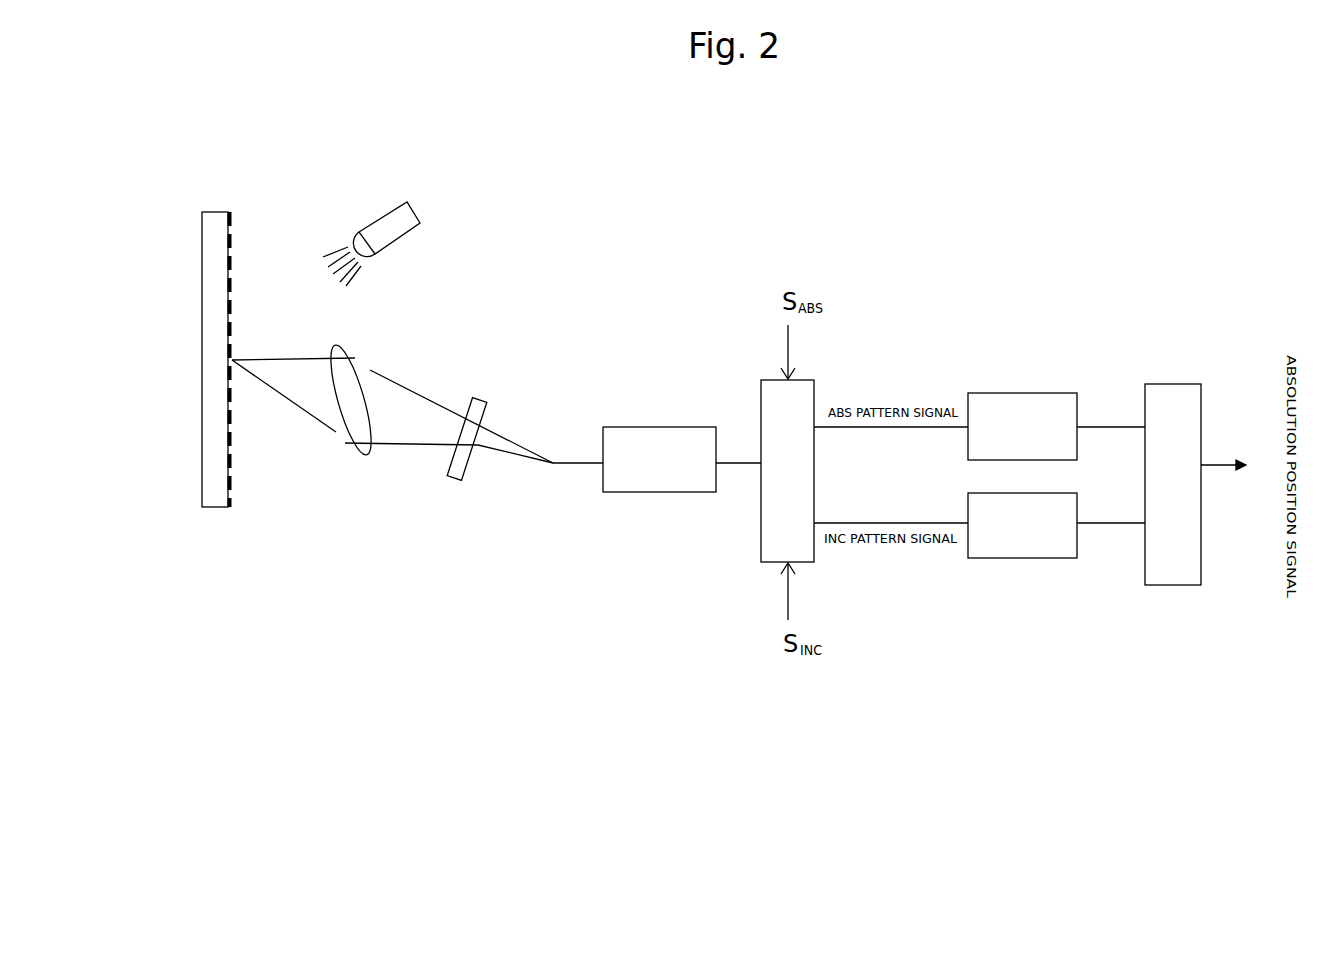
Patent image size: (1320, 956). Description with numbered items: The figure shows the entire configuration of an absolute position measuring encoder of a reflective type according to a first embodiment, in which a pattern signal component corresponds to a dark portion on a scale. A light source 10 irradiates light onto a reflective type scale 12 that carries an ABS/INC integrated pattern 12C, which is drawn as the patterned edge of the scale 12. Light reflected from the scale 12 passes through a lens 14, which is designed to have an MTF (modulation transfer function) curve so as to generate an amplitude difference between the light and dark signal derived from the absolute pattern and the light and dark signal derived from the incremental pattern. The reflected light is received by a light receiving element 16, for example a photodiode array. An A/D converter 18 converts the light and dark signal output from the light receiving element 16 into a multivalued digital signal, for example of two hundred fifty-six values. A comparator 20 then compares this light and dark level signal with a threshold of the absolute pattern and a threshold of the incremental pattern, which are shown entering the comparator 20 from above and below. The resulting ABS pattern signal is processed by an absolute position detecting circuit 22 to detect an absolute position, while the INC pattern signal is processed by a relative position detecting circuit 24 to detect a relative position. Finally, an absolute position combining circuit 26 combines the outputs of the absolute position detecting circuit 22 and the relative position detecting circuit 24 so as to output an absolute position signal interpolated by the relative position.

The light source 10 is at (387, 210).
The reflective type scale 12 is at (216, 507).
The ABS/INC integrated pattern 12C is at (232, 488).
The lens 14 is at (343, 452).
The light receiving element 16 is at (463, 479).
The A/D converter 18 is at (687, 426).
The comparator 20 is at (761, 398).
The absolute position detecting circuit 22 is at (998, 394).
The relative position detecting circuit 24 is at (997, 557).
The absolute position combining circuit 26 is at (1172, 385).